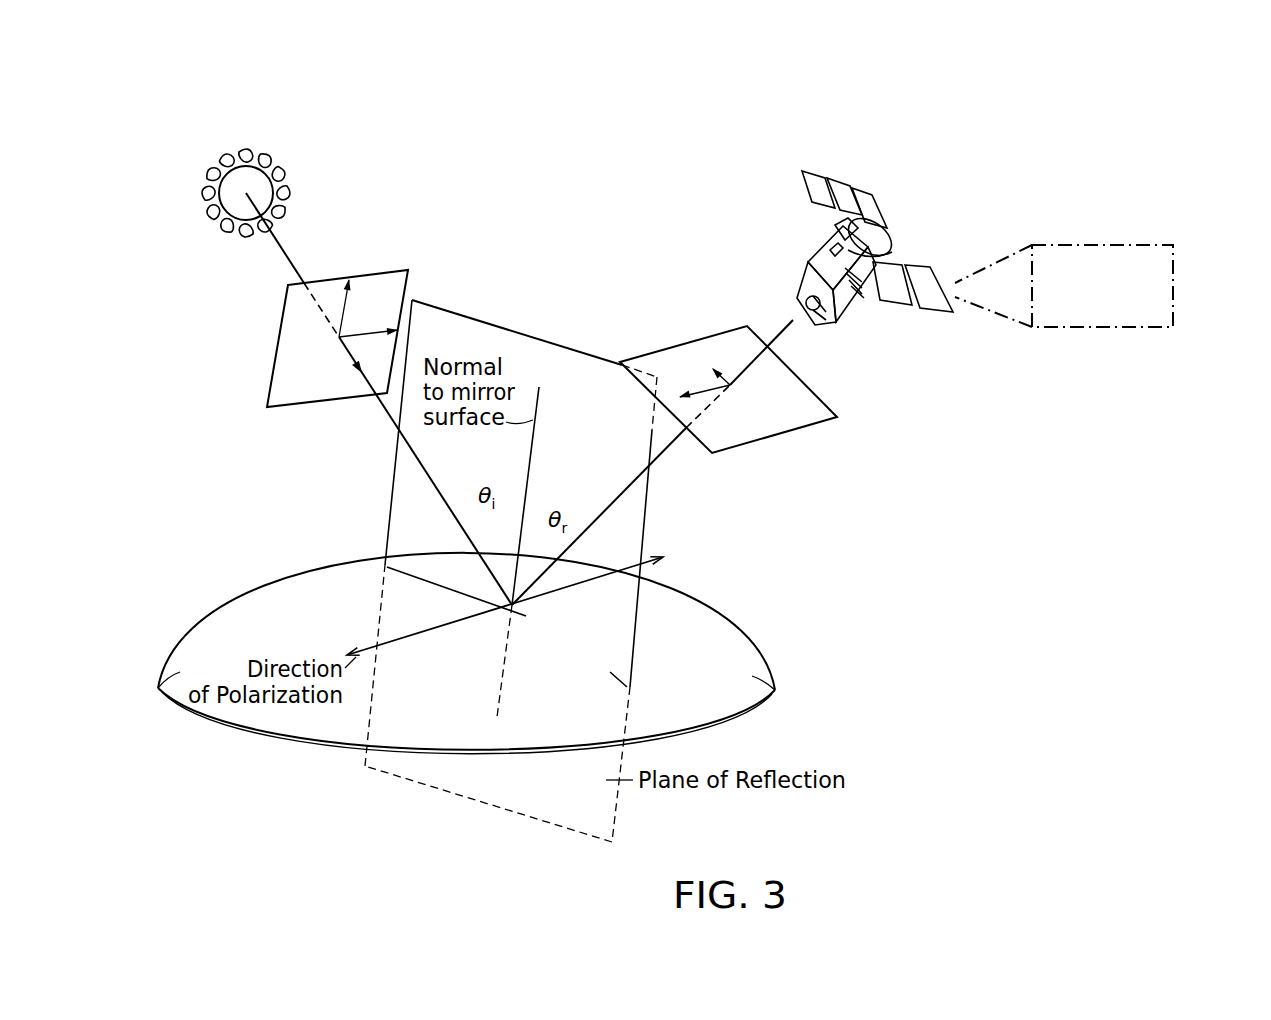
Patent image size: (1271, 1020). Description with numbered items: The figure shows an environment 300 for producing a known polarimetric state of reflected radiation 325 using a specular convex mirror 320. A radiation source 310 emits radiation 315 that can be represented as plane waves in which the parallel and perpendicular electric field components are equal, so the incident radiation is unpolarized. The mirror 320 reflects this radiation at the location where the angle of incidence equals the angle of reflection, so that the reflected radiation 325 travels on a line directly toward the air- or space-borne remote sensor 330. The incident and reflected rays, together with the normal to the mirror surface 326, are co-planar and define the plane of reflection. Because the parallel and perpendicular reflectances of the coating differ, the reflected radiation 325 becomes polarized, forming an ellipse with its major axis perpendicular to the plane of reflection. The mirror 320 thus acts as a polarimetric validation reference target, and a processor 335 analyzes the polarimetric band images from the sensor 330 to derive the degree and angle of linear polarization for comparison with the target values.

The environment 300 is at (783, 99).
The radiation source 310 is at (203, 149).
The radiation 315 is at (276, 257).
The specular convex mirror 320 is at (762, 712).
The reflected radiation 325 is at (667, 455).
The mirror surface 326 is at (707, 630).
The air- or space-borne remote sensor 330 is at (801, 213).
The processor 335 is at (1123, 312).